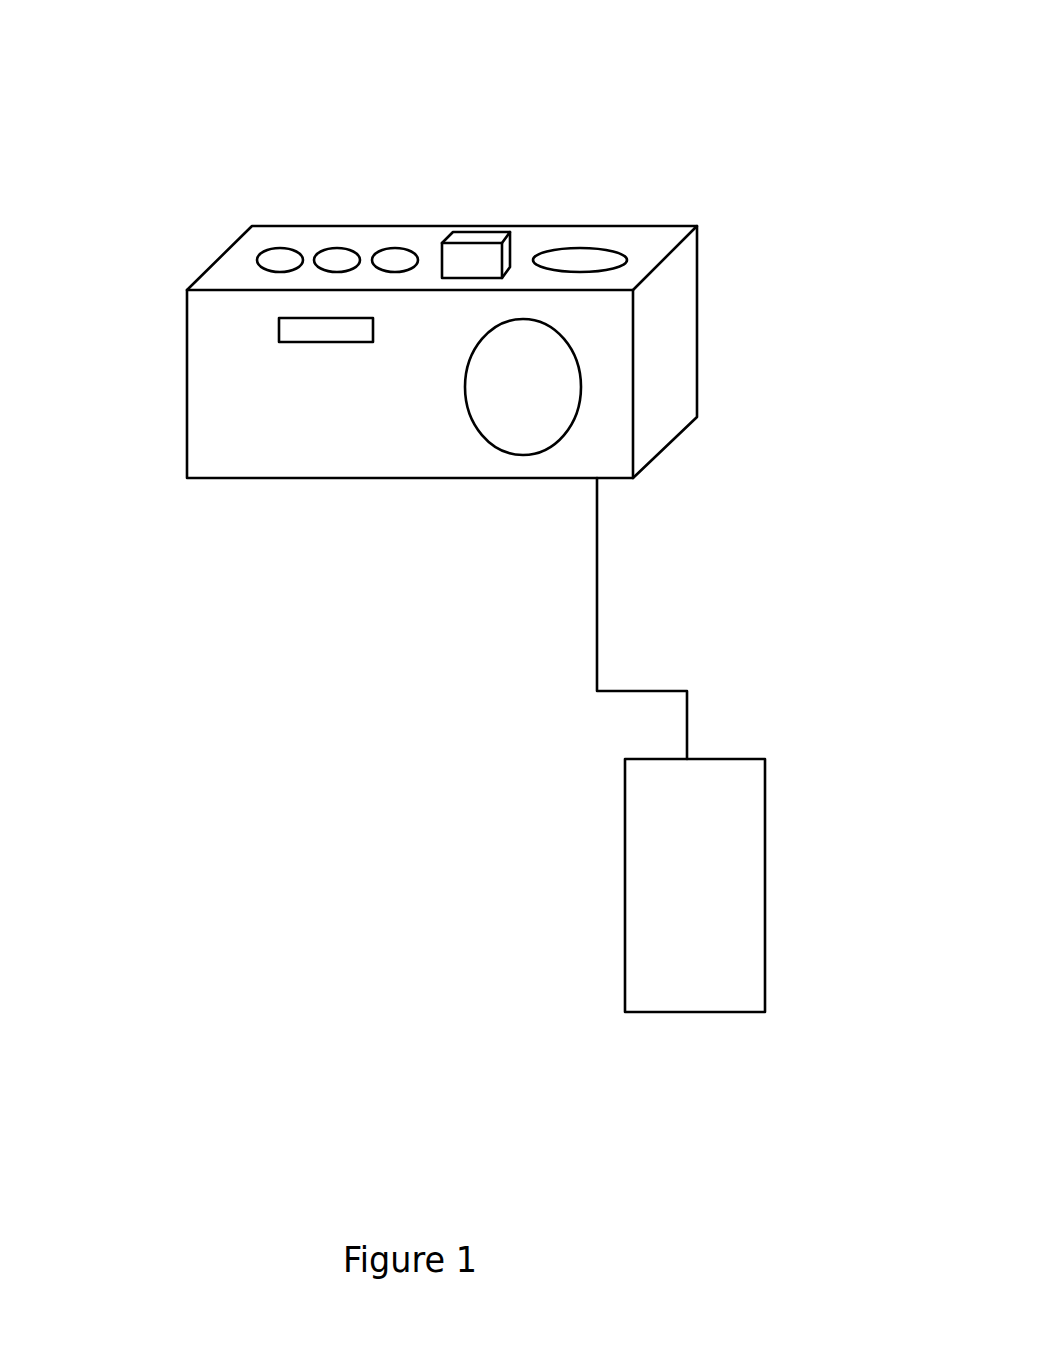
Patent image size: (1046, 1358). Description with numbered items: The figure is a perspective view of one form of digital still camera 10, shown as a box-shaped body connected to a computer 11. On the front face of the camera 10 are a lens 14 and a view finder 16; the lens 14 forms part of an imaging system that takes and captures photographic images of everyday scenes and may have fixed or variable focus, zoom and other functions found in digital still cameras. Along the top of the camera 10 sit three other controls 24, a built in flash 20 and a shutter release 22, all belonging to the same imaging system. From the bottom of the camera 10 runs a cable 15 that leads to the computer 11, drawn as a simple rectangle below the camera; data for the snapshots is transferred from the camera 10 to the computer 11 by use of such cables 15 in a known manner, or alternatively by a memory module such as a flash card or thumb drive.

The digital still camera 10 is at (743, 363).
The computer 11 is at (765, 858).
The lens 14 is at (512, 410).
The cables 15 is at (597, 580).
The view finder 16 is at (288, 320).
The built in flash 20 is at (470, 240).
The shutter release 22 is at (585, 255).
The other controls 24 is at (395, 248).